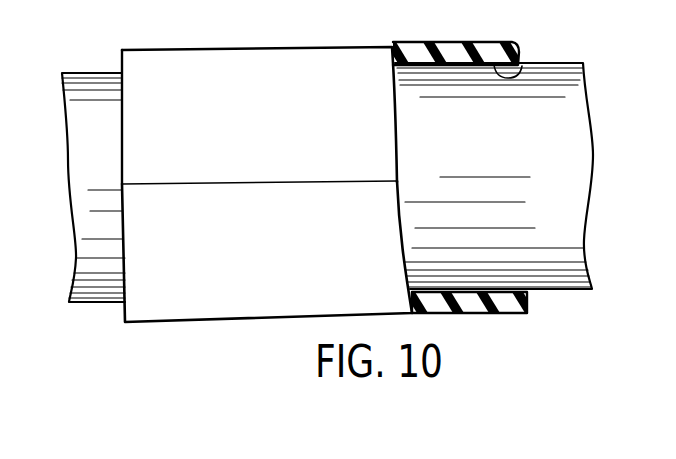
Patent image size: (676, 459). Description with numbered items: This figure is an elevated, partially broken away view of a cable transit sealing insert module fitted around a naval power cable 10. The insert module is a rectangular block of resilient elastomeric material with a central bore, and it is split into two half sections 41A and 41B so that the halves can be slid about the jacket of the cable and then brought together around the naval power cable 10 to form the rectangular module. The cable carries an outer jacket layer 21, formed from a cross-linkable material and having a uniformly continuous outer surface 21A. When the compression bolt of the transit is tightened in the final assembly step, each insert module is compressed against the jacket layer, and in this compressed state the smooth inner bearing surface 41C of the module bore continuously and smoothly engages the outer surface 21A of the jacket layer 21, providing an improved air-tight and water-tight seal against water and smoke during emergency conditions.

The naval power cable 10 is at (606, 117).
The outer jacket layer 21 is at (563, 212).
The outer surface of jacket layer 21A is at (553, 293).
The insert module half section 41A is at (303, 57).
The insert module half section 41B is at (178, 308).
The inner bearing surface 41C is at (538, 53).